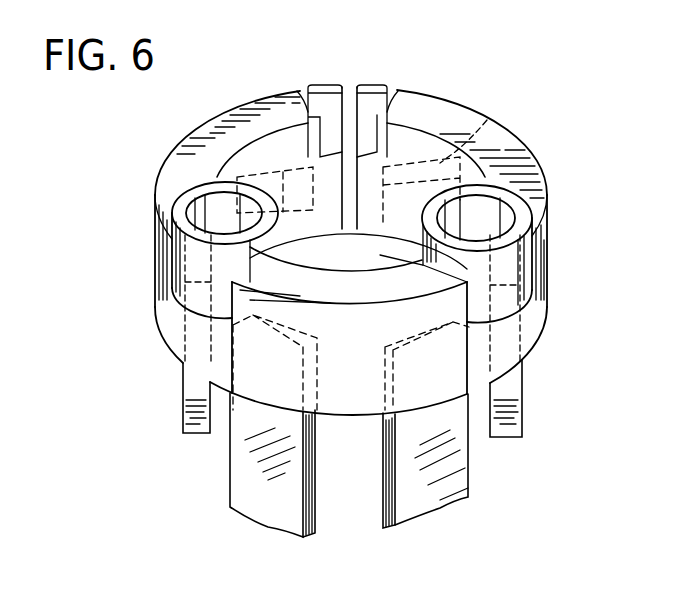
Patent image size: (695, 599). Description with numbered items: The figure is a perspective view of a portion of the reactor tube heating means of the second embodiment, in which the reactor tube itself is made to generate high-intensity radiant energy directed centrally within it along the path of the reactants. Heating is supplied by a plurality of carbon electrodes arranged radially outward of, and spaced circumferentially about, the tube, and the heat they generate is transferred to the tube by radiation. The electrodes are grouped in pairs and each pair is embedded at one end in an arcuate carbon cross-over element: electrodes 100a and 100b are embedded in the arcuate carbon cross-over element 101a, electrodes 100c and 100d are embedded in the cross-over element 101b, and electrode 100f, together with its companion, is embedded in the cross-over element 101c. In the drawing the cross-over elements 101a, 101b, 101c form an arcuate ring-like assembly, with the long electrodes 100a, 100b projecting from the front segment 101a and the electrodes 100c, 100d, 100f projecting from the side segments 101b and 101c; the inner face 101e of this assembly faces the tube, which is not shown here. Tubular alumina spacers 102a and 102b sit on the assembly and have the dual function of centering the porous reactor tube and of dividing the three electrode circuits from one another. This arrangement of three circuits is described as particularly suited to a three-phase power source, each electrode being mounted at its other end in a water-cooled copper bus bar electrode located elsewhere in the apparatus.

The carbon electrode 100a is at (272, 512).
The carbon electrode 100b is at (427, 508).
The carbon electrode 100c is at (513, 398).
The carbon electrode 100d is at (487, 120).
The carbon electrode 100f is at (183, 397).
The arcuate carbon cross-over element 101a is at (338, 403).
The cross-over element 101b is at (518, 163).
The cross-over element 101c is at (187, 143).
The inner wall of ring body 101e is at (297, 250).
The tubular alumina spacer 102a is at (177, 210).
The tubular alumina spacer 102b is at (520, 215).